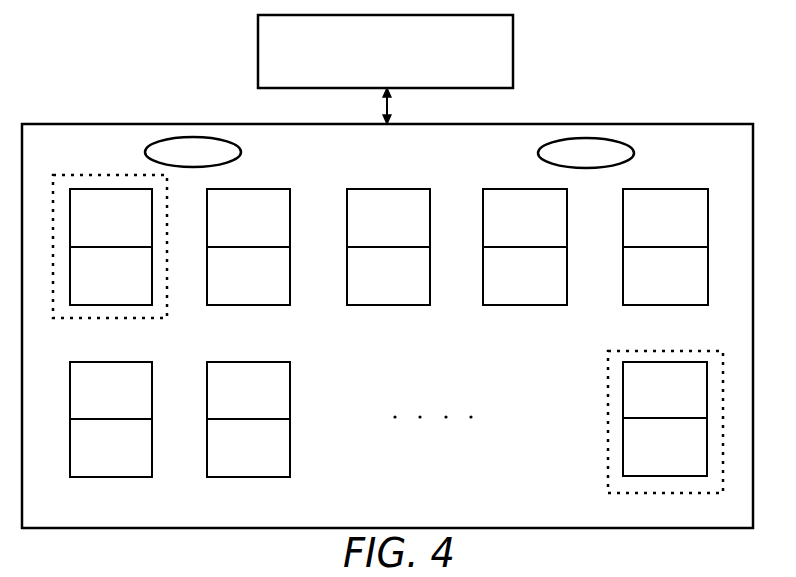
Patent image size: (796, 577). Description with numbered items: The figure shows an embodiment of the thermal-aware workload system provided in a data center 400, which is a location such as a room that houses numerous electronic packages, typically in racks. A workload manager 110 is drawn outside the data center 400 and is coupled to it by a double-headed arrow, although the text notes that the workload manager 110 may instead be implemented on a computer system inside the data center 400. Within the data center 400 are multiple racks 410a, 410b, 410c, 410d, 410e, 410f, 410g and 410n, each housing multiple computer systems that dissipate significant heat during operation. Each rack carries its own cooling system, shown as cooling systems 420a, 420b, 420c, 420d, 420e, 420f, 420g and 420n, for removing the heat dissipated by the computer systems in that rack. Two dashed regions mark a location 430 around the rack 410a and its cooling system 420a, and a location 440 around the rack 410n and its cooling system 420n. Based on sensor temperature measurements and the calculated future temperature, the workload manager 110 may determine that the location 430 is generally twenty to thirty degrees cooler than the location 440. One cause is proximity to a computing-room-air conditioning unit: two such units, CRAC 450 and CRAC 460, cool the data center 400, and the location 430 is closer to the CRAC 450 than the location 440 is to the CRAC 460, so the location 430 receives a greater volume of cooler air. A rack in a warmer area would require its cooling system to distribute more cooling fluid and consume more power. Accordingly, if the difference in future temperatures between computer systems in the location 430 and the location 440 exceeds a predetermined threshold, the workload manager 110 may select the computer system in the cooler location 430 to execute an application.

The workload manager 110 is at (513, 72).
The data center 400 is at (660, 124).
The rack 410a is at (111, 276).
The rack 410b is at (248, 276).
The rack 410c is at (388, 276).
The rack 410d is at (525, 276).
The rack 410e is at (665, 276).
The rack 410f is at (111, 448).
The rack 410g is at (248, 448).
The rack 410n is at (665, 447).
The cooling system 420a is at (111, 218).
The cooling system 420b is at (248, 218).
The cooling system 420c is at (388, 218).
The cooling system 420d is at (525, 218).
The cooling system 420e is at (665, 218).
The cooling system 420f is at (111, 390).
The cooling system 420g is at (248, 390).
The cooling system 420n is at (665, 390).
The location 430 is at (163, 311).
The location 440 is at (608, 372).
The CRAC 450 is at (193, 152).
The CRAC 460 is at (586, 153).